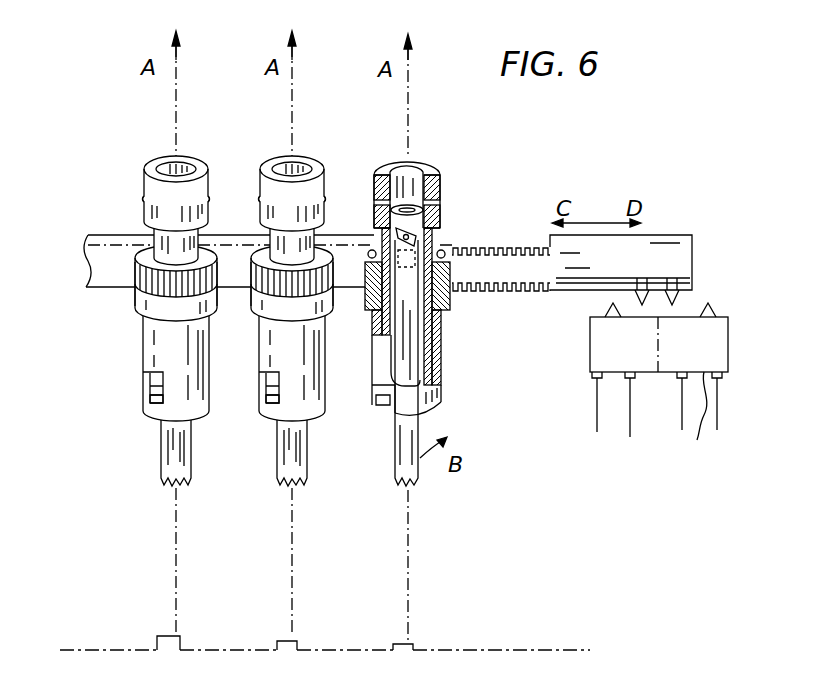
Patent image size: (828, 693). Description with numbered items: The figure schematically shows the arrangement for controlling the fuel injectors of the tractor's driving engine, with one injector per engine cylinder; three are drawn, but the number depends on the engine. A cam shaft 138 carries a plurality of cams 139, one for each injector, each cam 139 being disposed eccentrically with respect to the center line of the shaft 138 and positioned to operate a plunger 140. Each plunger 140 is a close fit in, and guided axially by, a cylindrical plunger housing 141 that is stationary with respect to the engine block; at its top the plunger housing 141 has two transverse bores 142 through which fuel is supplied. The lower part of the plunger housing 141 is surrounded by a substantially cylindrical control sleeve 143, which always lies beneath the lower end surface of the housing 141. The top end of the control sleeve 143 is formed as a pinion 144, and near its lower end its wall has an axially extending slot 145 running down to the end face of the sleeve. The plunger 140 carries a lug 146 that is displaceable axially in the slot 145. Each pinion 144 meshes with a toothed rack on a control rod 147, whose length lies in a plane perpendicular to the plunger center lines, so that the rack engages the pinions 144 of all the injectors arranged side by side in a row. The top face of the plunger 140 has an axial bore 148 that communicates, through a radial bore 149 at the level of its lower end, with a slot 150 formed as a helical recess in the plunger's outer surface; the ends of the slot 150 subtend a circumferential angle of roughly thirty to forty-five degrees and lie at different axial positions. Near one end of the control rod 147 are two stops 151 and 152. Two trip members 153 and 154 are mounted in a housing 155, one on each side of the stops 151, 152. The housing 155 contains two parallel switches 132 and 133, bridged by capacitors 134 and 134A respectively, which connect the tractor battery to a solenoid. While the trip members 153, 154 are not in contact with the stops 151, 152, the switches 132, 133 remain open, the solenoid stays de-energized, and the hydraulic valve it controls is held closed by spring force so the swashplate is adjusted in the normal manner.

The switch 132 is at (621, 344).
The switch 133 is at (675, 421).
The capacitor 134 is at (595, 342).
The capacitor 134A is at (675, 421).
The cam shaft 138 is at (516, 649).
The cam 139 is at (177, 636).
The plunger 140 is at (162, 440).
The plunger housing 141 is at (147, 168).
The transverse bores 142 is at (146, 198).
The control sleeve 143 is at (143, 324).
The pinion 144 is at (253, 289).
The slot 145 is at (146, 378).
The lug 146 is at (150, 403).
The control rod 147 is at (557, 243).
The axial bore 148 is at (412, 172).
The radial bore 149 is at (440, 219).
The slot 150 is at (394, 233).
The stop 151 is at (641, 288).
The stop 152 is at (676, 289).
The trip member 153 is at (602, 307).
The trip member 154 is at (703, 314).
The housing 155 is at (647, 371).